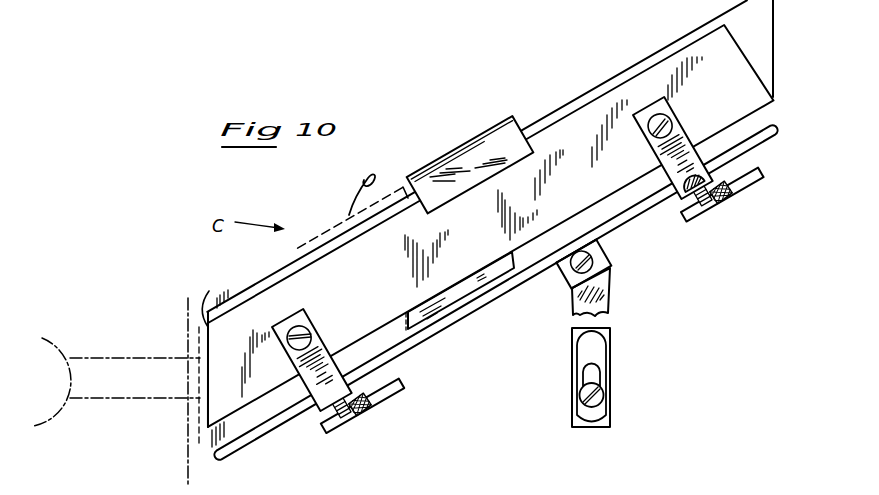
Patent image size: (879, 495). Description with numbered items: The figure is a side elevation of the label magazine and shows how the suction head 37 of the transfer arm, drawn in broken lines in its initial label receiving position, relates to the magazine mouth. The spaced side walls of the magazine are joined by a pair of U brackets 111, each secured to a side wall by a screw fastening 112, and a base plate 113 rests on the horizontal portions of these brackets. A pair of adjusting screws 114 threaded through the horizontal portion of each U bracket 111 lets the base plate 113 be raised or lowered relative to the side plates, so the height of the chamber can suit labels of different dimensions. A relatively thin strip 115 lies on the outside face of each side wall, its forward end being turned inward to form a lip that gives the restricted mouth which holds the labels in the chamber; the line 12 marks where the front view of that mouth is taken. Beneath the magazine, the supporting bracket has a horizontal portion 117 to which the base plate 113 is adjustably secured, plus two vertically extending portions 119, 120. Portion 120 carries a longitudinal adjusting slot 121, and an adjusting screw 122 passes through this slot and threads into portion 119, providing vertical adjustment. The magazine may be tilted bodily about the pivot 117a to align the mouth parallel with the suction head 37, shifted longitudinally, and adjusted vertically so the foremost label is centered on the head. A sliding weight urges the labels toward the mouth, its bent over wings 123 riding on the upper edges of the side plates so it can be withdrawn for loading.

The section line 12— 12 is at (183, 305).
The suction head 37 is at (209, 299).
The U bracket 111 is at (712, 173).
The screw fastening 112 is at (298, 347).
The base plate 113 is at (471, 309).
The adjusting screw 114 is at (368, 399).
The thin strip 115 is at (753, 79).
The horizontal portion of supporting bracket 117 is at (608, 262).
The pivot 117a is at (597, 240).
The vertically extending portion of supporting bracket 119 is at (610, 303).
The vertically extending portion of supporting bracket 120 is at (600, 352).
The longitudinal adjusting slot 121 is at (595, 375).
The adjusting screw 122 is at (605, 394).
The bent over wing 123 is at (513, 116).